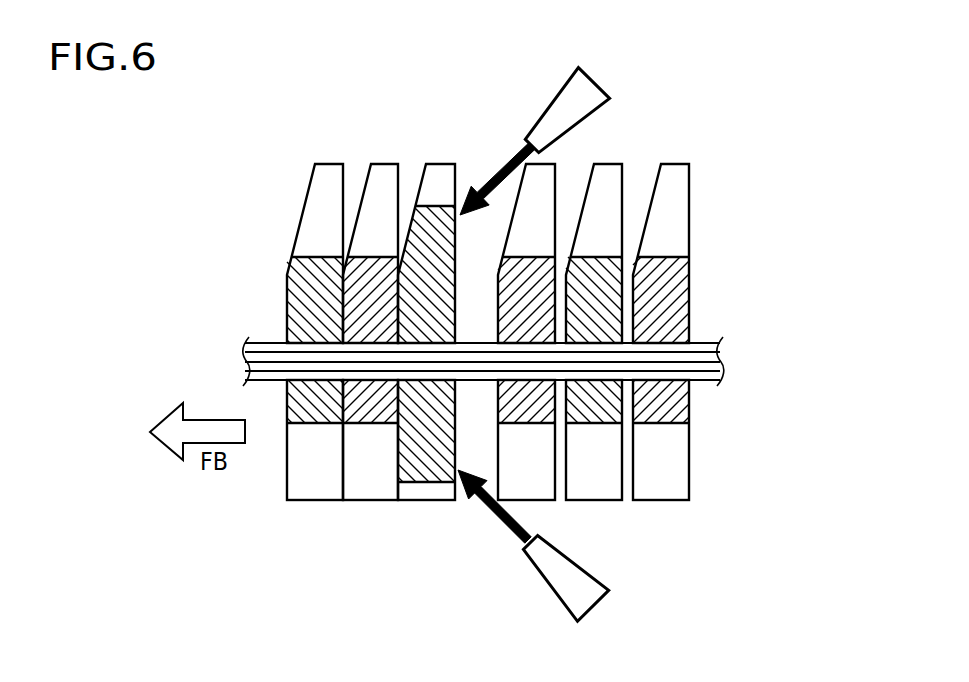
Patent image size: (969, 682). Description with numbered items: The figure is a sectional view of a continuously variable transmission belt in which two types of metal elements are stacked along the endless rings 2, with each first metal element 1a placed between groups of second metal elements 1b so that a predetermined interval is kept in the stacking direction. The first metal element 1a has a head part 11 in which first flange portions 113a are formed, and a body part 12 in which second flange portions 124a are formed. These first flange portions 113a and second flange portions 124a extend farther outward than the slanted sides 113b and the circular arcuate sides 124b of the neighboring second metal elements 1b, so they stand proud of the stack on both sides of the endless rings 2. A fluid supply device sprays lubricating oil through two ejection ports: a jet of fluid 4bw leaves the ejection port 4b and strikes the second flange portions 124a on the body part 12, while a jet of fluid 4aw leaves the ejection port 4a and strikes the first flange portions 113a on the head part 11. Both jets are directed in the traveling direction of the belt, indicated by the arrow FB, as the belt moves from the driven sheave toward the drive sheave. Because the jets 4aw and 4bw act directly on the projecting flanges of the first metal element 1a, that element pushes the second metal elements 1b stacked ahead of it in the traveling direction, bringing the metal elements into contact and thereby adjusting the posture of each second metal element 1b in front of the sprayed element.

The endless ring 2 is at (702, 350).
The body part 12 is at (442, 206).
The second flange portion 124a is at (427, 166).
The circular arcuate side 124b is at (663, 257).
The second metal element 1b is at (364, 506).
The first metal element 1a is at (449, 510).
The head part 11 is at (422, 501).
The first flange portion 113a is at (415, 483).
The slanted side 113b is at (653, 424).
The ejection port 4a is at (588, 578).
The jet of fluid 4aw is at (517, 523).
The ejection port 4b is at (562, 90).
The jet of fluid 4bw is at (500, 165).